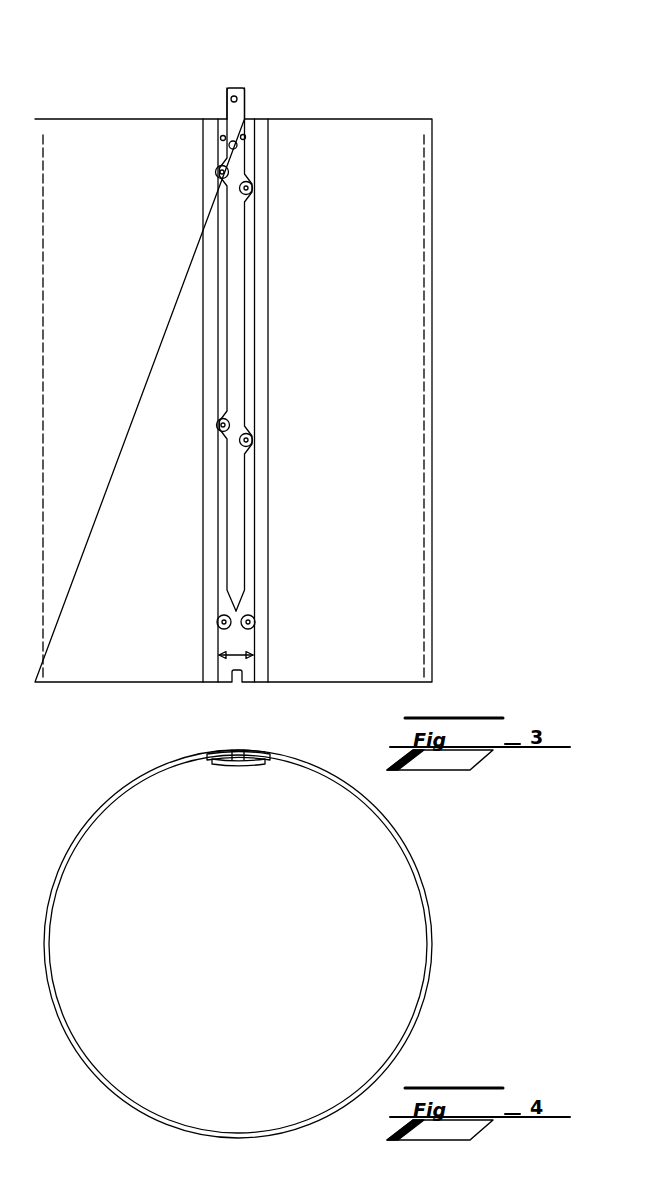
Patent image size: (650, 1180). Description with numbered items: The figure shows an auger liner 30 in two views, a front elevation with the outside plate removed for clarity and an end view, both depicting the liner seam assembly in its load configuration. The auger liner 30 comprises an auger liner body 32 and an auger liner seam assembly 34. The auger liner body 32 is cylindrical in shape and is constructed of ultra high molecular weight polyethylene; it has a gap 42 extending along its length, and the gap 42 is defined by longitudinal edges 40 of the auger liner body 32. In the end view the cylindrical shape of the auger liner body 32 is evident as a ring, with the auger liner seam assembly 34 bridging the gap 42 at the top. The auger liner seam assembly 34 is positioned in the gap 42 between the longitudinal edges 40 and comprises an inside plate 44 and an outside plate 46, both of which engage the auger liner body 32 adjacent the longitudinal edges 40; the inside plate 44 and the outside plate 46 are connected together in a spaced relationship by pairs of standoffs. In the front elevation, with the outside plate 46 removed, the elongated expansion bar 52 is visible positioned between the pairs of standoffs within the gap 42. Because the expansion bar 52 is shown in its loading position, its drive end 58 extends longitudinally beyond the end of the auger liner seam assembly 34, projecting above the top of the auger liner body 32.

In FIG. 3, the auger liner 30 is at (357, 118).
In FIG. 4, the auger liner 30 is at (418, 862).
In FIG. 3, the auger liner body 32 is at (432, 462).
In FIG. 4, the auger liner body 32 is at (432, 942).
In FIG. 3, the auger liner seam assembly 34 is at (246, 118).
In FIG. 4, the auger liner seam assembly 34 is at (262, 746).
In FIG. 3, the longitudinal edges 40 is at (250, 337).
In FIG. 3, the gap 42 is at (219, 652).
In FIG. 3, the inside plate 44 is at (231, 329).
In FIG. 4, the inside plate 44 is at (237, 760).
In FIG. 4, the outside plate 46 is at (215, 745).
In FIG. 3, the expansion bar 52 is at (232, 215).
In FIG. 3, the drive end 58 is at (233, 86).